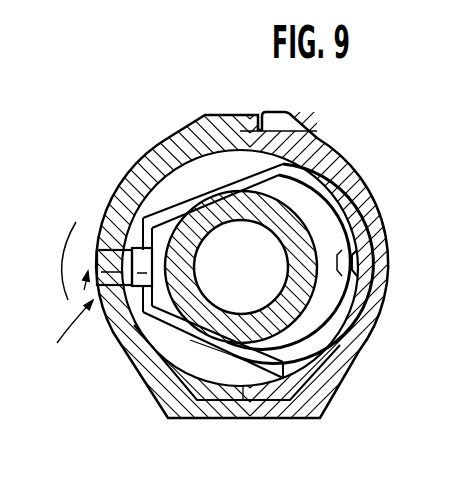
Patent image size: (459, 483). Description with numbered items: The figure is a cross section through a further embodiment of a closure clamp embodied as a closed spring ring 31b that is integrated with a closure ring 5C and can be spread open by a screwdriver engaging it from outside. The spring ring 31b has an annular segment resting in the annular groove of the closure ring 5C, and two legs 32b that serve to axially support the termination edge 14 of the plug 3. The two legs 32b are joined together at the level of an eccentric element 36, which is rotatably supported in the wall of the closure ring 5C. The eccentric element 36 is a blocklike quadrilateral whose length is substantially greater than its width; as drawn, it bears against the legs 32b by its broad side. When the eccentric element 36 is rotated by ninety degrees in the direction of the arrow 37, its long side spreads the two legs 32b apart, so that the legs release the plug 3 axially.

The plug 3 is at (300, 300).
The termination edge 14 is at (297, 202).
The spring ring 31b is at (143, 228).
The legs 32b is at (232, 186).
The eccentric element 36 is at (66, 335).
The arrow 37 is at (75, 222).
The closure ring 5C is at (126, 378).